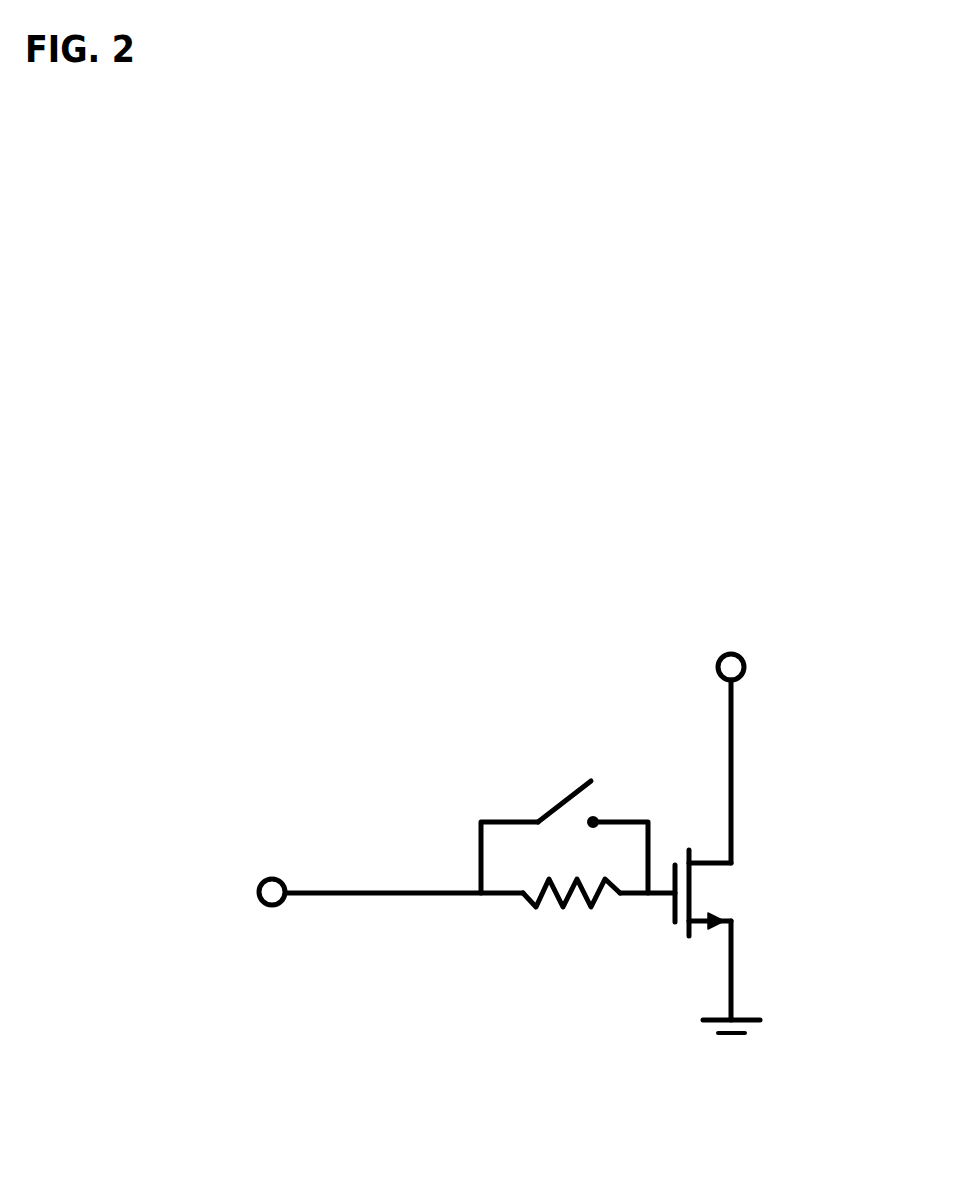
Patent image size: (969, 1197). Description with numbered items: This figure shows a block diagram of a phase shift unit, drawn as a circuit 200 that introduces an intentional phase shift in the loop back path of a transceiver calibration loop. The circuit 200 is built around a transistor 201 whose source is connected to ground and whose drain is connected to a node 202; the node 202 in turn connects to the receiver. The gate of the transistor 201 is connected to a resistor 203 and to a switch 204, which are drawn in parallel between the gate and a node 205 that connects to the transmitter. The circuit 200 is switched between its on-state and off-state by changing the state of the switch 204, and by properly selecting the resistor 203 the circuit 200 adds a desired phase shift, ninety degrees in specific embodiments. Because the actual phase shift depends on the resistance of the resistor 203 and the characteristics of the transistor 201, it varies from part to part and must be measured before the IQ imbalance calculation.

The circuit 200 is at (452, 608).
The transistor 201 is at (747, 893).
The node 202 is at (745, 668).
The resistor 203 is at (560, 903).
The switch 204 is at (547, 813).
The node 205 is at (258, 905).